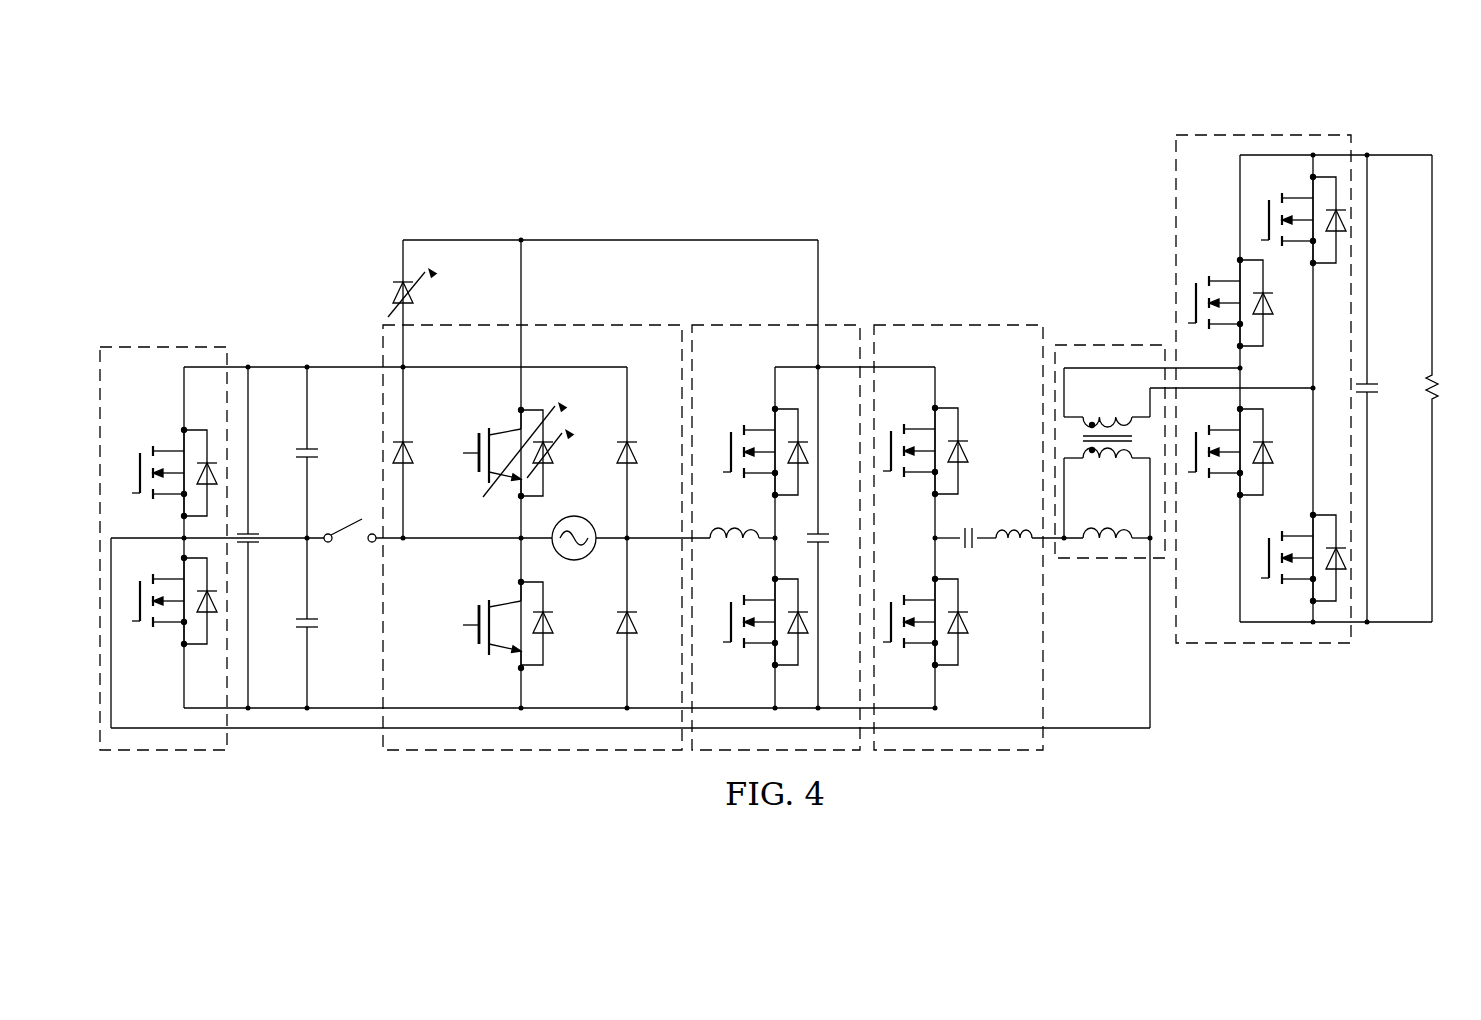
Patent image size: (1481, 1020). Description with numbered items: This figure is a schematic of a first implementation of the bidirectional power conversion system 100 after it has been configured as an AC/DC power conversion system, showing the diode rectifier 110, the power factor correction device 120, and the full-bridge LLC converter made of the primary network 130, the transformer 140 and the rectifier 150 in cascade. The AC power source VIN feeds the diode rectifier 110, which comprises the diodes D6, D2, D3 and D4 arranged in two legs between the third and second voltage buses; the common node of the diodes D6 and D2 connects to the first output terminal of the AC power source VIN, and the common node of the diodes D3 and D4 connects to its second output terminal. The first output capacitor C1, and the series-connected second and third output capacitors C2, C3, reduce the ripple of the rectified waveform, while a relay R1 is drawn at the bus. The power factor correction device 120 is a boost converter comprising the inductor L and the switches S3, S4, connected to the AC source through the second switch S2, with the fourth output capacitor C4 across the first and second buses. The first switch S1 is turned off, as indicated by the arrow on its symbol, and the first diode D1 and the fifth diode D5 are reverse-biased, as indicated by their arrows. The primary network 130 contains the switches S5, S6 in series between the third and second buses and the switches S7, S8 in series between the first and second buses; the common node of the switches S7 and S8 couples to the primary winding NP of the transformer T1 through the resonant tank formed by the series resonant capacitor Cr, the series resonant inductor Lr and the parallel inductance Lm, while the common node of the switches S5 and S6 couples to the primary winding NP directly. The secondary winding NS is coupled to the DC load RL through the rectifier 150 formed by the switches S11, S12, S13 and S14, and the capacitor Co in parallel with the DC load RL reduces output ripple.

The bidirectional power conversion system 100 is at (266, 175).
The diode rectifier 110 is at (490, 322).
The power factor correction device 120 is at (749, 322).
The primary network 130 is at (149, 344).
The transformer 140 is at (1113, 342).
The rectifier 150 is at (1265, 648).
The first switch S1 is at (493, 449).
The second switch S2 is at (493, 621).
The third switch S3 is at (765, 449).
The fourth switch S4 is at (765, 619).
The fifth switch S5 is at (174, 470).
The sixth switch S6 is at (174, 598).
The seventh switch S7 is at (925, 449).
The eighth switch S8 is at (925, 619).
The switch S11 is at (1229, 300).
The switch S12 is at (1229, 449).
The switch S13 is at (1303, 216).
The switch S14 is at (1303, 556).
The first diode D1 is at (538, 448).
The second diode D2 is at (557, 623).
The third diode D3 is at (647, 454).
The fourth diode D4 is at (647, 625).
The fifth diode D5 is at (421, 291).
The sixth diode D6 is at (423, 454).
The first output capacitor C1 is at (267, 540).
The second output capacitor C2 is at (325, 453).
The third output capacitor C3 is at (325, 624).
The fourth output capacitor C4 is at (833, 524).
The series resonant capacitor Cr is at (969, 524).
The capacitor Co is at (1386, 392).
The relay R1 is at (350, 518).
The inductor L is at (734, 517).
The series resonant inductor Lr is at (1014, 516).
The parallel inductance Lm is at (1107, 517).
The transformer T1 is at (1124, 438).
The secondary winding NS is at (1107, 409).
The primary winding NP is at (1107, 467).
The AC power source VIN is at (574, 524).
The DC load RL is at (1449, 388).